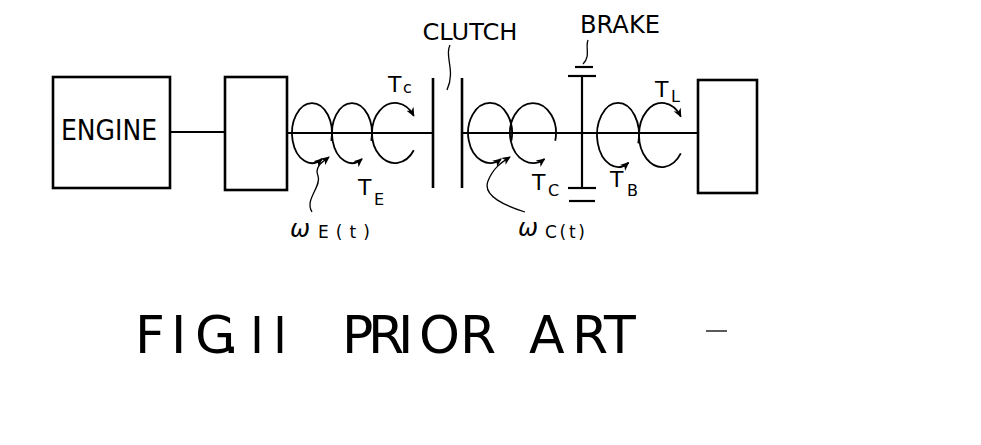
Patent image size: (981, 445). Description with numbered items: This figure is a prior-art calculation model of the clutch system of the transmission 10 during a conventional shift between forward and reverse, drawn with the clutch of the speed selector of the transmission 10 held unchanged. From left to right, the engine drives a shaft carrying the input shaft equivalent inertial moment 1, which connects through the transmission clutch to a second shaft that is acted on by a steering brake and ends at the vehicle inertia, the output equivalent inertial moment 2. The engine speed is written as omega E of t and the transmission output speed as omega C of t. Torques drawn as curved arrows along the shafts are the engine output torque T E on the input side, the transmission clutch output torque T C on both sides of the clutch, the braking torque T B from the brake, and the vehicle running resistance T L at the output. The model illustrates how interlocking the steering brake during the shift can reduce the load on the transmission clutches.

The transmission 10 is at (447, 194).
The input shaft equivalent inertial moment 1 is at (263, 150).
The output equivalent inertial moment 2 is at (727, 136).